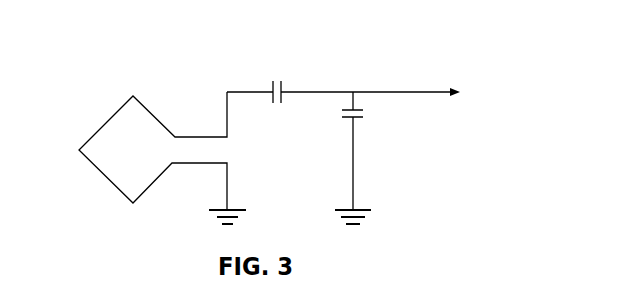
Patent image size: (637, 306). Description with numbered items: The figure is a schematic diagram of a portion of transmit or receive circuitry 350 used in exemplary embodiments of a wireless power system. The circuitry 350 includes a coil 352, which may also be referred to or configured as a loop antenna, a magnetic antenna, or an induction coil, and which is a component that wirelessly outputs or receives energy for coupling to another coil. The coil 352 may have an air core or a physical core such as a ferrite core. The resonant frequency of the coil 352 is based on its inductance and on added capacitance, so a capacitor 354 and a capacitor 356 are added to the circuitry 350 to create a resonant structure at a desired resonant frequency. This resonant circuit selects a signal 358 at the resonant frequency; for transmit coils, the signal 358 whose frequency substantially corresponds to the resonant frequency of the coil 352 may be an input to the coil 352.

The transmit or receive circuitry 350 is at (172, 46).
The coil 352 is at (108, 120).
The capacitor 354 is at (283, 86).
The capacitor 356 is at (357, 120).
The signal 358 is at (387, 92).